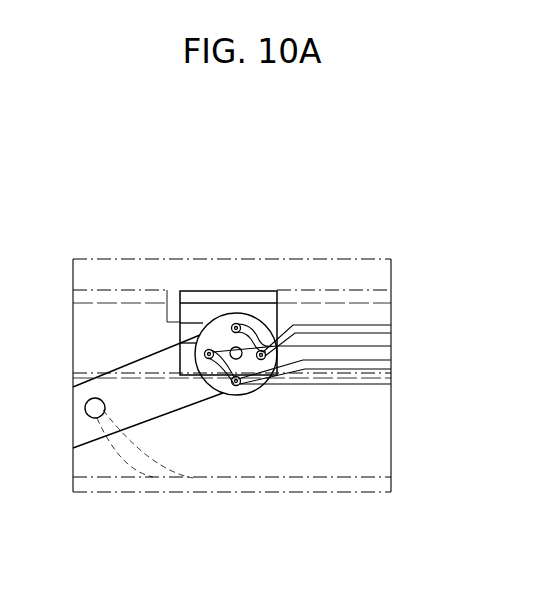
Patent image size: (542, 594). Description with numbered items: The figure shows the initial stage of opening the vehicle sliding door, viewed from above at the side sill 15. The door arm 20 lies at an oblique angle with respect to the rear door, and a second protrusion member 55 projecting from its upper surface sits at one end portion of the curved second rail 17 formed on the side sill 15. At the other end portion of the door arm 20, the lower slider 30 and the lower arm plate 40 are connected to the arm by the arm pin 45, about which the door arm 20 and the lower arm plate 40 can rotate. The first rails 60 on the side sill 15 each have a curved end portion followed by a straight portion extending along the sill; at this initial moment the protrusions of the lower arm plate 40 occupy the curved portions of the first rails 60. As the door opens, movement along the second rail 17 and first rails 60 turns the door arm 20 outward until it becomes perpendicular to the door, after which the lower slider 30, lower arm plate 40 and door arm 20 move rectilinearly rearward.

The side sill 15 is at (93, 300).
The second rail 17 is at (168, 470).
The door arm 20 is at (158, 415).
The lower slider 30 is at (257, 310).
The lower arm plate 40 is at (228, 313).
The arm pin 45 is at (197, 338).
The second protrusion member 55 is at (85, 406).
The first rails 60 is at (346, 328).